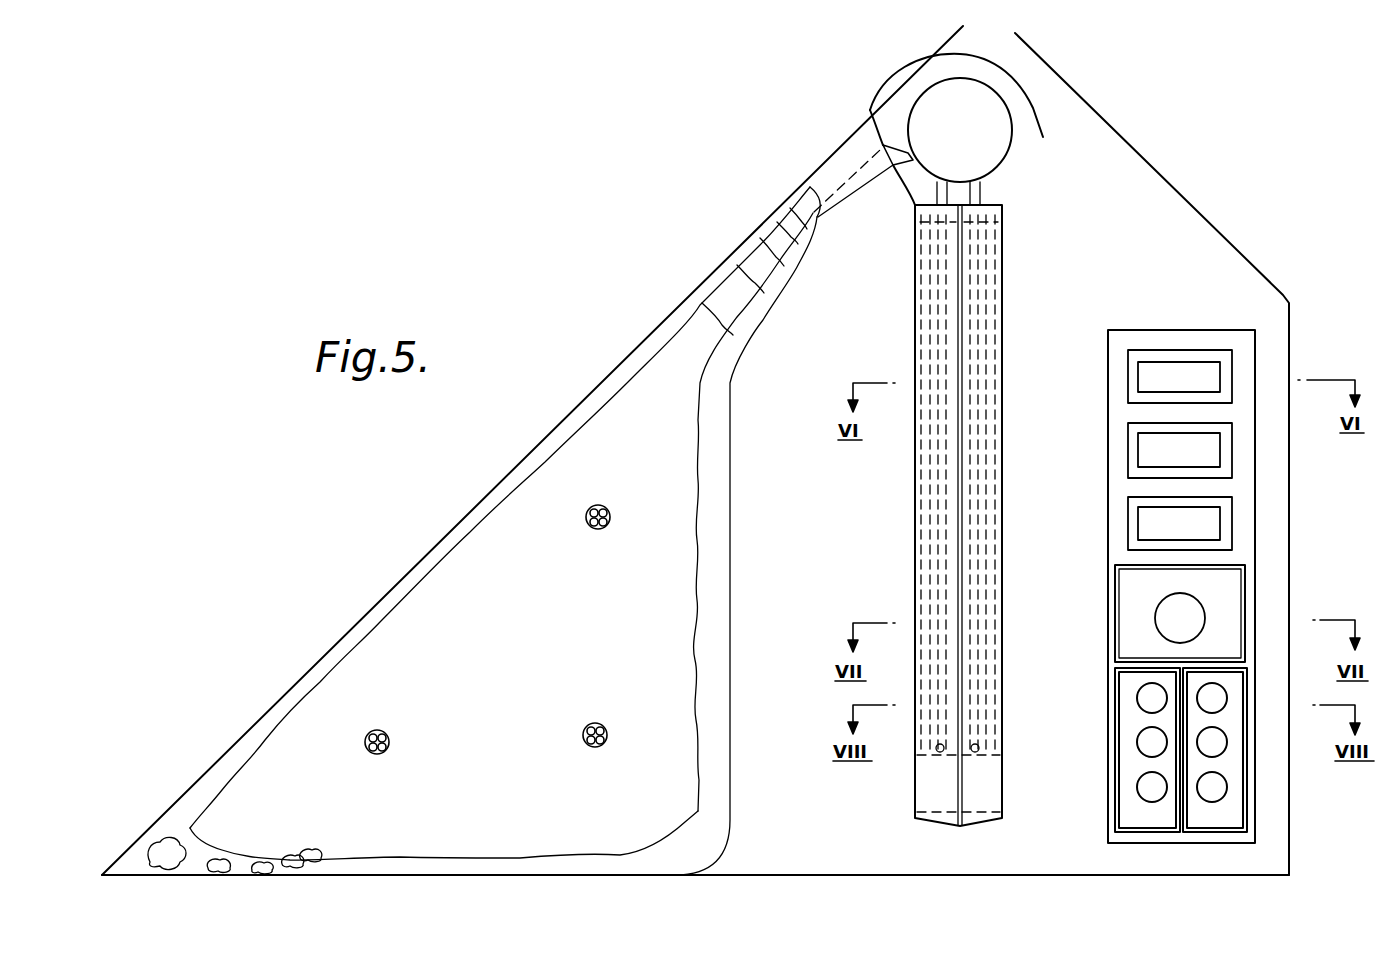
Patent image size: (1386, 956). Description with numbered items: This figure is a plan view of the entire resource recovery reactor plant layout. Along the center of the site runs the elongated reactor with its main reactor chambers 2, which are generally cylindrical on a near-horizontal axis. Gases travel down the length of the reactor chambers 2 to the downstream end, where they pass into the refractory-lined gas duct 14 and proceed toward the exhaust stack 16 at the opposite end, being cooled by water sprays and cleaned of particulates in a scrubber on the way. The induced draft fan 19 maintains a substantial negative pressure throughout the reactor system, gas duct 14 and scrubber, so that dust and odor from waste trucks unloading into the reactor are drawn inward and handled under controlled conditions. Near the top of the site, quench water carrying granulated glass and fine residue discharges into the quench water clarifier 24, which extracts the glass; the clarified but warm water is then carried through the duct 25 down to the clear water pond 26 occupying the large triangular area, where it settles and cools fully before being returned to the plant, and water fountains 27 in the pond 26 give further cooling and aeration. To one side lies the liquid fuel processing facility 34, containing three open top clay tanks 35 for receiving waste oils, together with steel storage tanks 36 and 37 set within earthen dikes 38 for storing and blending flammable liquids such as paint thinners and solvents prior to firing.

The main reactor chamber 2 is at (993, 445).
The gas duct 14 is at (977, 492).
The exhaust stack 16 is at (936, 750).
The induced draft fan 19 is at (1002, 343).
The quench water clarifier 24 is at (973, 140).
The duct 25 is at (849, 197).
The clear water pond 26 is at (518, 684).
The water fountain 27 is at (600, 505).
The liquid fuel processing facility 34 is at (1108, 517).
The open top clay tank 35 is at (1193, 388).
The steel storage tank 36 is at (1193, 628).
The steel storage tank 37 is at (1137, 787).
The earthen dike 38 is at (1125, 632).